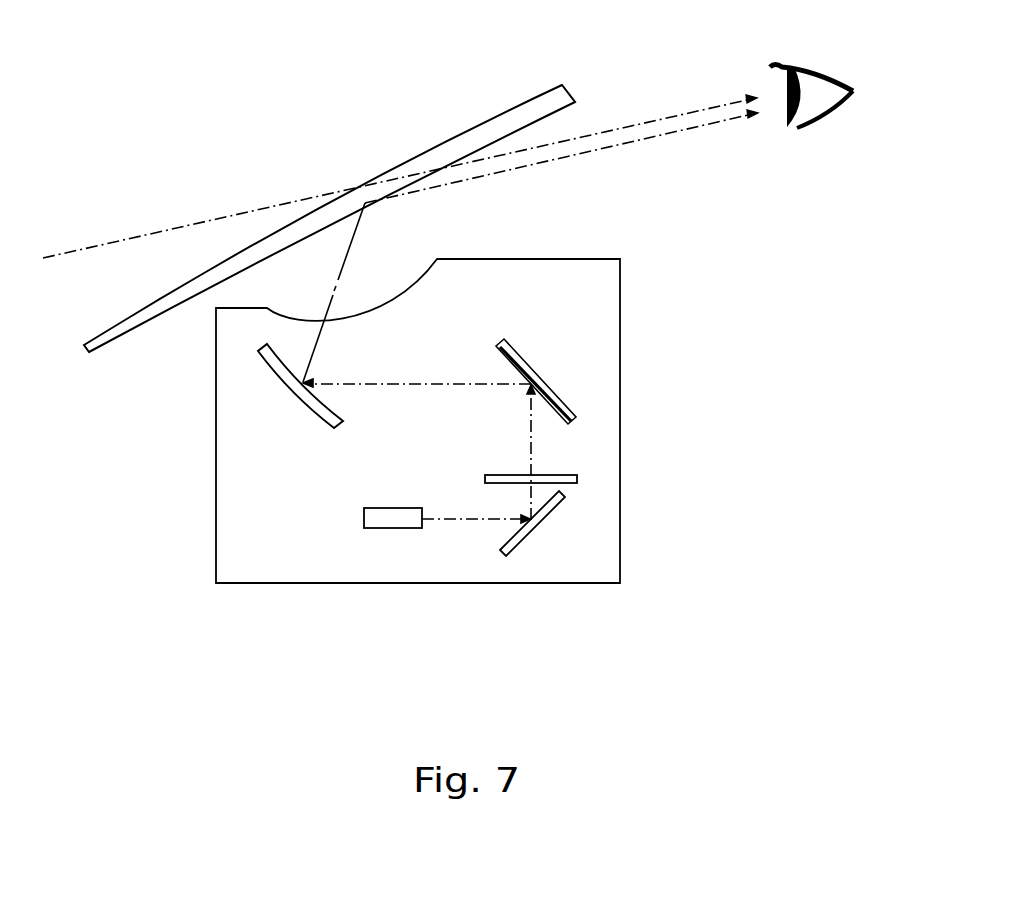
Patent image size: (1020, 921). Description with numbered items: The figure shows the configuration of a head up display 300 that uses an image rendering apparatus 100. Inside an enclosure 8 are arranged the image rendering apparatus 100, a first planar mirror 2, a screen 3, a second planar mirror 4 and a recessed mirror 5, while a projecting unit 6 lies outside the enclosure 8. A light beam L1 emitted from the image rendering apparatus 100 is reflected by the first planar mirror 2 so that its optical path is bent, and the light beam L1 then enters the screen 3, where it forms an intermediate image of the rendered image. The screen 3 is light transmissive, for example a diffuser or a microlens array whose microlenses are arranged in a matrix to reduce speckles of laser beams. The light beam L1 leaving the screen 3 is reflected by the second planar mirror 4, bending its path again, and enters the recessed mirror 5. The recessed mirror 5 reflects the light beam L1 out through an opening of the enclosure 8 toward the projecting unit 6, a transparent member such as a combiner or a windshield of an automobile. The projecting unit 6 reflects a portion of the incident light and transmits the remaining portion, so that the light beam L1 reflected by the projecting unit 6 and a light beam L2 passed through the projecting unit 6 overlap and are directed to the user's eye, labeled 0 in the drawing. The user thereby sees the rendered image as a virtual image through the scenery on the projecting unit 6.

The head up display 300 is at (152, 34).
The projecting unit 6 is at (448, 152).
The enclosure 8 is at (620, 305).
The recessed mirror 5 is at (279, 373).
The second planar mirror 4 is at (555, 400).
The screen 3 is at (568, 476).
The first planar mirror 2 is at (522, 537).
The image rendering apparatus 100 is at (395, 522).
The light beam L1 is at (567, 160).
The light beam L2 is at (288, 200).
The observer eye 0 is at (822, 68).